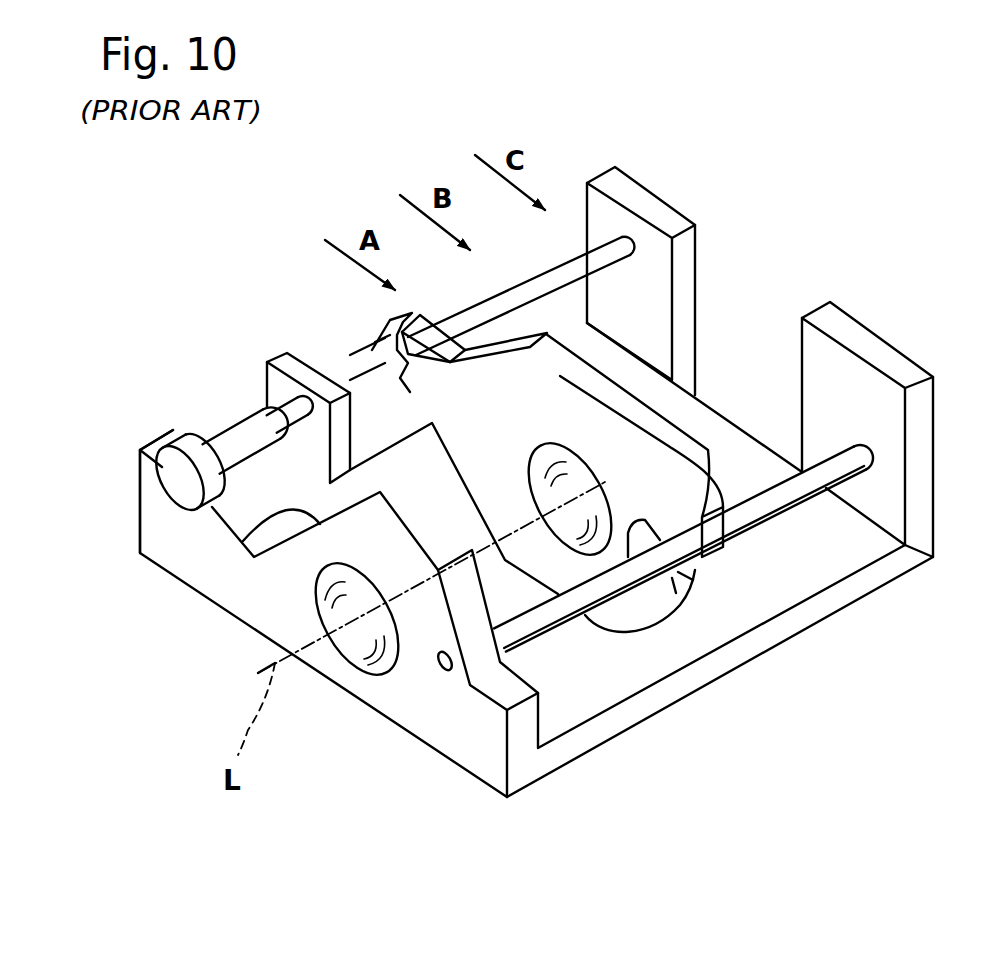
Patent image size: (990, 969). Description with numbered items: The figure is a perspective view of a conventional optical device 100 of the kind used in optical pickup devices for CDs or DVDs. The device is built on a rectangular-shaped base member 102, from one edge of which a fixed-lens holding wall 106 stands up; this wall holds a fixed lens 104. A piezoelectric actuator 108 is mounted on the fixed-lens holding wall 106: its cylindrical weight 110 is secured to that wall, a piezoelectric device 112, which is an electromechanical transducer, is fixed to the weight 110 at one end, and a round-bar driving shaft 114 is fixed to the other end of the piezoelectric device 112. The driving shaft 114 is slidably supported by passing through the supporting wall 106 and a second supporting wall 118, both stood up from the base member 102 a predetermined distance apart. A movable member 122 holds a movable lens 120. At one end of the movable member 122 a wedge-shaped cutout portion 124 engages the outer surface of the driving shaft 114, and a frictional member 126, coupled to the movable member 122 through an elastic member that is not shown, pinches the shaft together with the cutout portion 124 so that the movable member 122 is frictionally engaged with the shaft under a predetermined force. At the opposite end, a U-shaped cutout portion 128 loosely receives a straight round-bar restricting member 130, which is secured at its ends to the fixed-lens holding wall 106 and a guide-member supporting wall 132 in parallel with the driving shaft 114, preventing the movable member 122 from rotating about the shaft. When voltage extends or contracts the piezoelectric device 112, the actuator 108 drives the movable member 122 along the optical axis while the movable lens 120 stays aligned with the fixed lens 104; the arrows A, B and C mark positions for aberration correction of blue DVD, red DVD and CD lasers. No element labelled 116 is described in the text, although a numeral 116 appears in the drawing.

The optical device 100 is at (587, 110).
The base member 102 is at (720, 680).
The fixed lens 104 is at (330, 660).
The fixed-lens holding wall 106 is at (242, 545).
The piezoelectric actuator 108 is at (330, 272).
The weight 110 is at (178, 447).
The piezoelectric device 112 is at (240, 425).
The driving shaft 114 is at (363, 357).
The support block 116 is at (318, 452).
The supporting wall 118 is at (657, 190).
The movable lens 120 is at (563, 537).
The movable member 122 is at (657, 413).
The wedge-shaped cutout portion 124 is at (400, 385).
The frictional member 126 is at (400, 378).
The U-shaped cutout portion 128 is at (697, 570).
The restricting member 130 is at (787, 508).
The guide-member supporting wall 132 is at (865, 365).